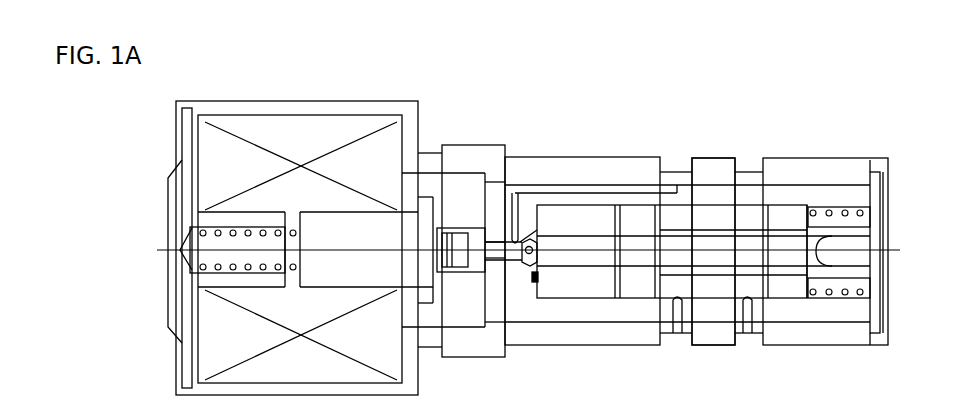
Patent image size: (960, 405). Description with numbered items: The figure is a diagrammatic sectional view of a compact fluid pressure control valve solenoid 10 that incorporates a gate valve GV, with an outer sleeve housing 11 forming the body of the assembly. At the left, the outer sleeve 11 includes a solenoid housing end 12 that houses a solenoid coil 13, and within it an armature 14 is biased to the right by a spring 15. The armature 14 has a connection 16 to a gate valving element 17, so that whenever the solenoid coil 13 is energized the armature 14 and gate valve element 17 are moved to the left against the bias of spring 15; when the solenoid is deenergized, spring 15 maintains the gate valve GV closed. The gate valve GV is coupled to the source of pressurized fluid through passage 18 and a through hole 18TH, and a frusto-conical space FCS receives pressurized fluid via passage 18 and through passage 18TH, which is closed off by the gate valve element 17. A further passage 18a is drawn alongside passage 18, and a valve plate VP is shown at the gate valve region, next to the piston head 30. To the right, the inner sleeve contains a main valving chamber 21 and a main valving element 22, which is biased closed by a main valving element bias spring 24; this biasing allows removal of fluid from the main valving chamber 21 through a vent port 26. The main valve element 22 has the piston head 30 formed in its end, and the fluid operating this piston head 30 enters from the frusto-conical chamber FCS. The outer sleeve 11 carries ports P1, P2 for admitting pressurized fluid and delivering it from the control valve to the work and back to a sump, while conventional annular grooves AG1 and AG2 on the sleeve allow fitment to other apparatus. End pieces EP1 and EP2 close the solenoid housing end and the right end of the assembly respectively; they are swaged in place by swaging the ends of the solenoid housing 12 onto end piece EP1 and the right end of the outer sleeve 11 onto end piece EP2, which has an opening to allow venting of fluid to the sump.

The fluid pressure control valve solenoid 10 is at (512, 96).
The outer sleeve housing 11 is at (537, 204).
The solenoid housing end 12 is at (322, 101).
The solenoid coil 13 is at (278, 130).
The armature 14 is at (368, 228).
The spring 15 is at (203, 228).
The connection 16 is at (452, 157).
The gate valving element 17 is at (508, 262).
The passage 18 is at (600, 188).
The passage 18a is at (620, 190).
The through hole 18TH is at (560, 188).
The main valving chamber 21 is at (636, 204).
The main valving element 22 is at (713, 251).
The main valving element bias spring 24 is at (845, 208).
The vent port 26 is at (878, 236).
The piston head 30 is at (537, 262).
The port P1 is at (712, 158).
The port P2 is at (752, 158).
The annular groove AG1 is at (680, 338).
The annular groove AG2 is at (752, 338).
The end piece EP1 is at (168, 316).
The end piece EP2 is at (885, 322).
The frusto-conical space FCS is at (528, 270).
The gate valve GV is at (497, 265).
The valve plate VP is at (532, 246).